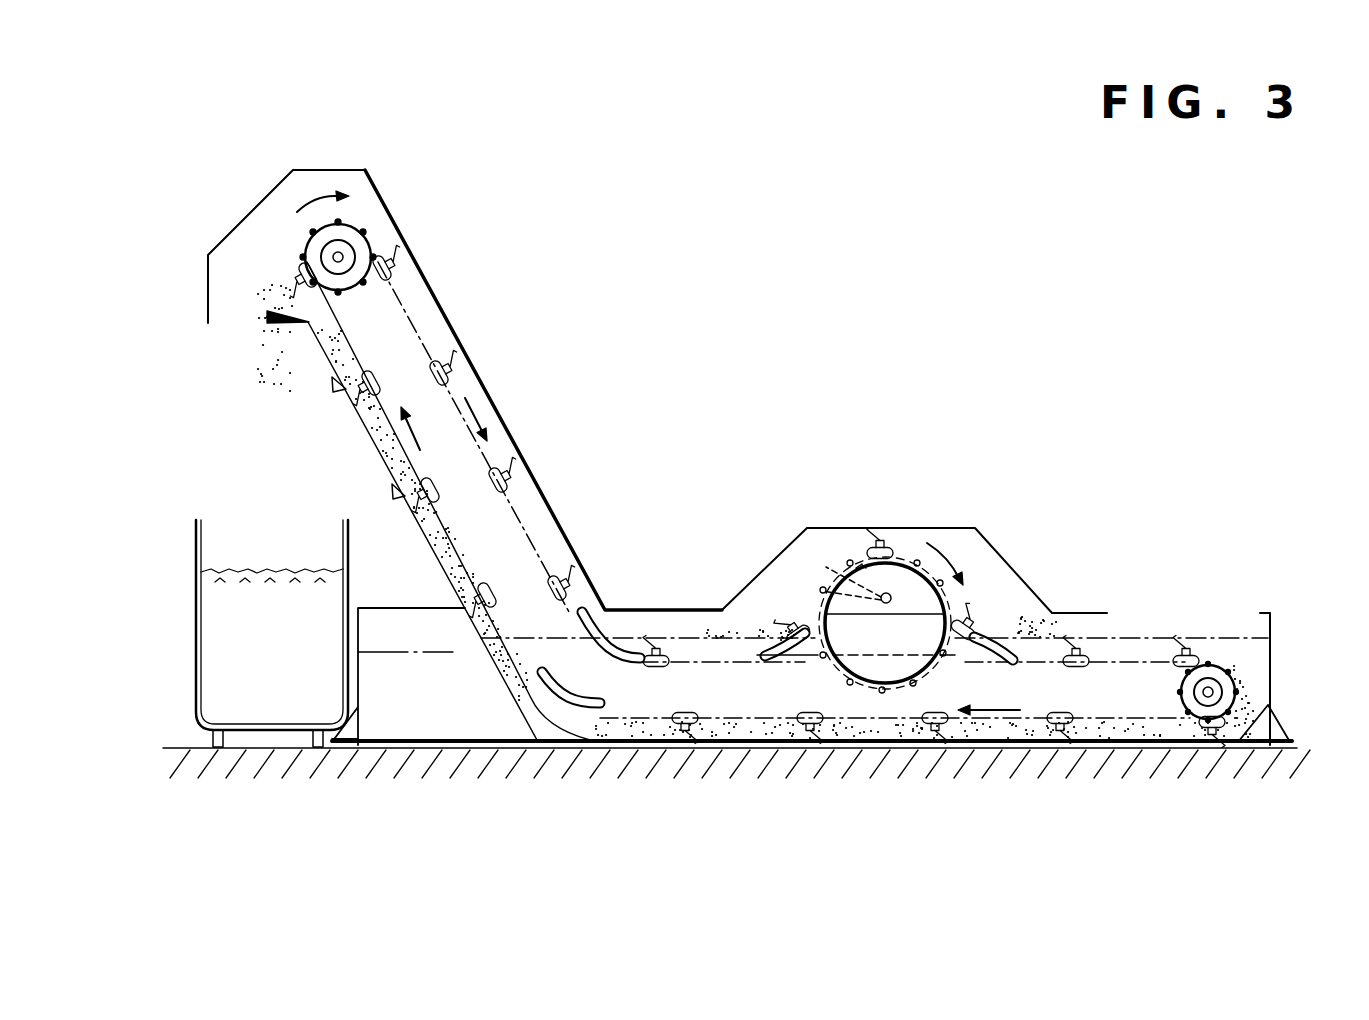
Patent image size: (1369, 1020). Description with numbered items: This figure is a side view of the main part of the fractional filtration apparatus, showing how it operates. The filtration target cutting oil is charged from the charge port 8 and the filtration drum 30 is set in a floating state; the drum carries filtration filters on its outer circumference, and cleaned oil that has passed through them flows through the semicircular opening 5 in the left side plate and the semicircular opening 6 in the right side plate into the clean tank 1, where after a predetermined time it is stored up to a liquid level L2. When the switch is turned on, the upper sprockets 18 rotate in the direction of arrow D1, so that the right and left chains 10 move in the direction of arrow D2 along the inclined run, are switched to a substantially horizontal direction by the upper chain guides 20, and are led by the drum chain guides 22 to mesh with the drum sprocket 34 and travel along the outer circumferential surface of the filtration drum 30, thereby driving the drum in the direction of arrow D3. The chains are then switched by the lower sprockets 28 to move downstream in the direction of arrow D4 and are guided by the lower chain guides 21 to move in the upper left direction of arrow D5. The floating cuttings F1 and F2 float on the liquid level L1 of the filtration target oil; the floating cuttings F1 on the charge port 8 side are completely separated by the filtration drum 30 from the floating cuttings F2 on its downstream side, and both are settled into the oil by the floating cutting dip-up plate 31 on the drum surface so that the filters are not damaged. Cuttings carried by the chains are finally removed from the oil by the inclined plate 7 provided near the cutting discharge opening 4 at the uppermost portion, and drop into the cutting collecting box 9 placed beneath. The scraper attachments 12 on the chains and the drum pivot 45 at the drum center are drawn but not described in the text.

The clean tank 1 is at (425, 725).
The cutting discharge opening 4 is at (233, 306).
The semicircular opening 5 is at (907, 572).
The semicircular opening 6 is at (947, 620).
The inclined plate 7 is at (281, 326).
The charge port 8 is at (1208, 632).
The cutting collecting box 9 is at (218, 633).
The chain 10 is at (412, 320).
The scraper attachment 12 is at (392, 251).
The upper sprocket 18 is at (370, 243).
The upper chain guide 20 is at (593, 605).
The lower chain guide 21 is at (585, 704).
The drum chain guide 22 is at (785, 632).
The lower sprocket 28 is at (1225, 690).
The filtration drum 30 is at (840, 565).
The floating cutting dip-up plate 31 is at (860, 563).
The drum sprocket 34 is at (836, 582).
The pivot shaft 45 is at (890, 592).
The rotation direction of upper sprockets D1 is at (312, 198).
The chain moving direction D2 is at (475, 413).
The drum driving direction D3 is at (945, 548).
The downstream chain direction D4 is at (993, 706).
The upper left chain direction D5 is at (400, 440).
The liquid level of filtration target cutting oil L1 is at (676, 636).
The liquid level of cleaned cutting oil L2 is at (376, 650).
The floating cuttings F1 is at (1050, 625).
The floating cuttings F2 is at (740, 636).